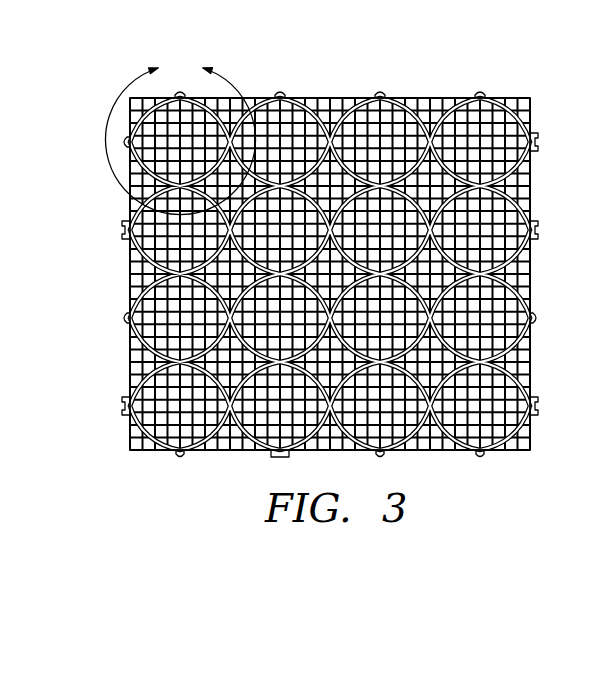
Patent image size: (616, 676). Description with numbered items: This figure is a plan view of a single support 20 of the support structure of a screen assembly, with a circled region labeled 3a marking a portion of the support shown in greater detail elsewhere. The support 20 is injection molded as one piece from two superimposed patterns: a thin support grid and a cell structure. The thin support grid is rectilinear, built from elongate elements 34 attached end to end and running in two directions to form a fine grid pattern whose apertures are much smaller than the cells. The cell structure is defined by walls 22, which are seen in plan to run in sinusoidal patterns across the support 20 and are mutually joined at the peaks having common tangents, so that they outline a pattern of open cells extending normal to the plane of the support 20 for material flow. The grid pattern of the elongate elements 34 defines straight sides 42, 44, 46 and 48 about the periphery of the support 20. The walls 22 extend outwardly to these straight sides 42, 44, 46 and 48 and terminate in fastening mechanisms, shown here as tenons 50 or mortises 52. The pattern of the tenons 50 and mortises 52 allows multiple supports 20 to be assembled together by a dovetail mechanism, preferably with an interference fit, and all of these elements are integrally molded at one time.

The support 20 is at (131, 366).
The walls 22 is at (307, 117).
The elongate elements 34 is at (523, 297).
The straight side 42 is at (423, 96).
The straight side 44 is at (131, 271).
The straight side 46 is at (201, 453).
The straight side 48 is at (532, 180).
The tenons 50 is at (121, 141).
The mortises 52 is at (122, 227).
The detail region of FIG. 3a is at (181, 132).